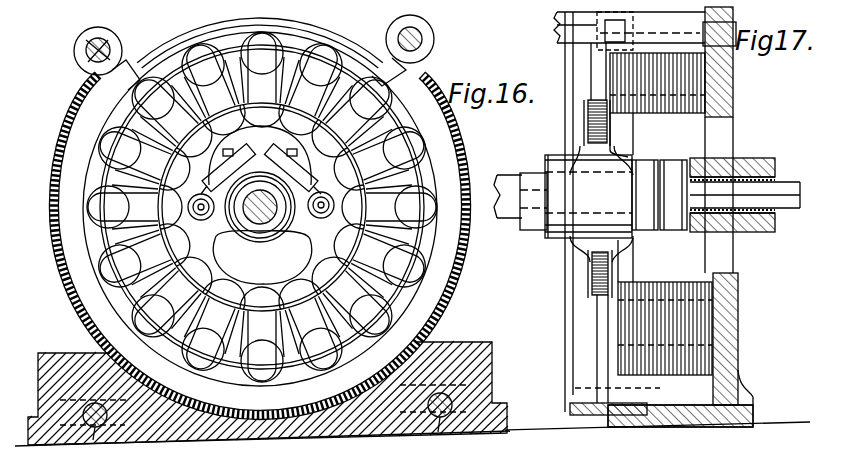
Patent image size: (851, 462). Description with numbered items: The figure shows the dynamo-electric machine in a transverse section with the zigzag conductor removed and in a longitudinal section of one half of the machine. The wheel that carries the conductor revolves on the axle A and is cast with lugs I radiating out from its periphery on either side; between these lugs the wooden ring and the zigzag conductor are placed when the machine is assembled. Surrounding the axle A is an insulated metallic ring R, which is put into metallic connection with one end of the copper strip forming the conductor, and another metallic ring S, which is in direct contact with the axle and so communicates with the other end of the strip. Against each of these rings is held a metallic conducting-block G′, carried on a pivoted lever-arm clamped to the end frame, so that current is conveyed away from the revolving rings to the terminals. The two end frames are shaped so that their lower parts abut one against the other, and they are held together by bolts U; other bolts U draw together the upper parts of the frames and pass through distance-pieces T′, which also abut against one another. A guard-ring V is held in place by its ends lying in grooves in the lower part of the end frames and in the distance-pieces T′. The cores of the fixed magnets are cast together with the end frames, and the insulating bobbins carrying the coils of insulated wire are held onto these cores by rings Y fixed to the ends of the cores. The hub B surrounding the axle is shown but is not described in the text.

In FIG. 16, the rings Y is at (378, 204).
In FIG. 16, the metallic conducting-block G′ is at (261, 205).
In FIG. 16, the distance-pieces T′ is at (252, 52).
In FIG. 17, the distance-pieces T′ is at (635, 34).
In FIG. 16, the guard-ring V is at (84, 46).
In FIG. 16, the bolts U is at (424, 36).
In FIG. 17, the bolts U is at (556, 30).
In FIG. 17, the lugs I is at (598, 118).
In FIG. 17, the insulated metallic ring R is at (646, 162).
In FIG. 17, the metallic ring S is at (676, 164).
In FIG. 17, the axle A is at (520, 201).
In FIG. 17, the hub B is at (588, 196).